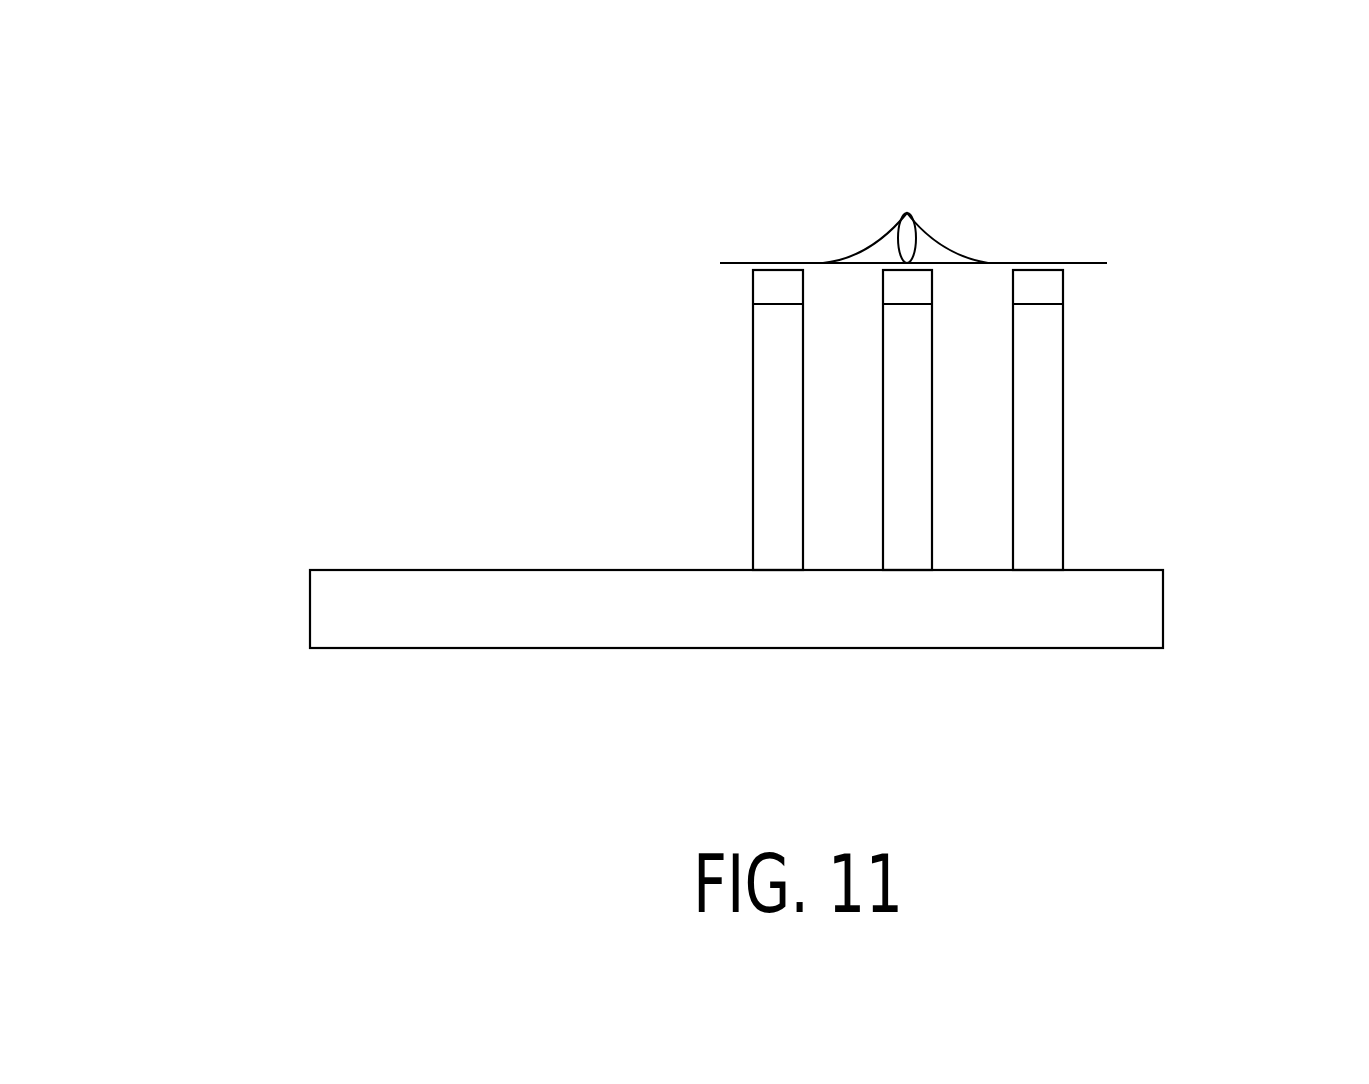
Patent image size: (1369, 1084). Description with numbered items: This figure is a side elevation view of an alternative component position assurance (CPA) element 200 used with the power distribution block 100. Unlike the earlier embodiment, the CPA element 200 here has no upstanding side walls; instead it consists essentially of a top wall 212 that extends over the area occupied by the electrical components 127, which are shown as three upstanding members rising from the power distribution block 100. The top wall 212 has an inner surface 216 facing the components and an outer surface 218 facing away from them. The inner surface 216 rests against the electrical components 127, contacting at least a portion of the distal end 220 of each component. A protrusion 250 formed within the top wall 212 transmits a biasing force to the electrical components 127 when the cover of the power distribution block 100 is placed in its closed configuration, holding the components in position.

The power distribution block 100 is at (268, 604).
The electrical components 127 is at (779, 480).
The component position assurance (CPA) element 200 is at (710, 243).
The top wall 212 is at (763, 263).
The inner surface 216 is at (1092, 263).
The outer surface 218 is at (1002, 263).
The distal end 220 is at (882, 300).
The protrusion 250 is at (897, 242).